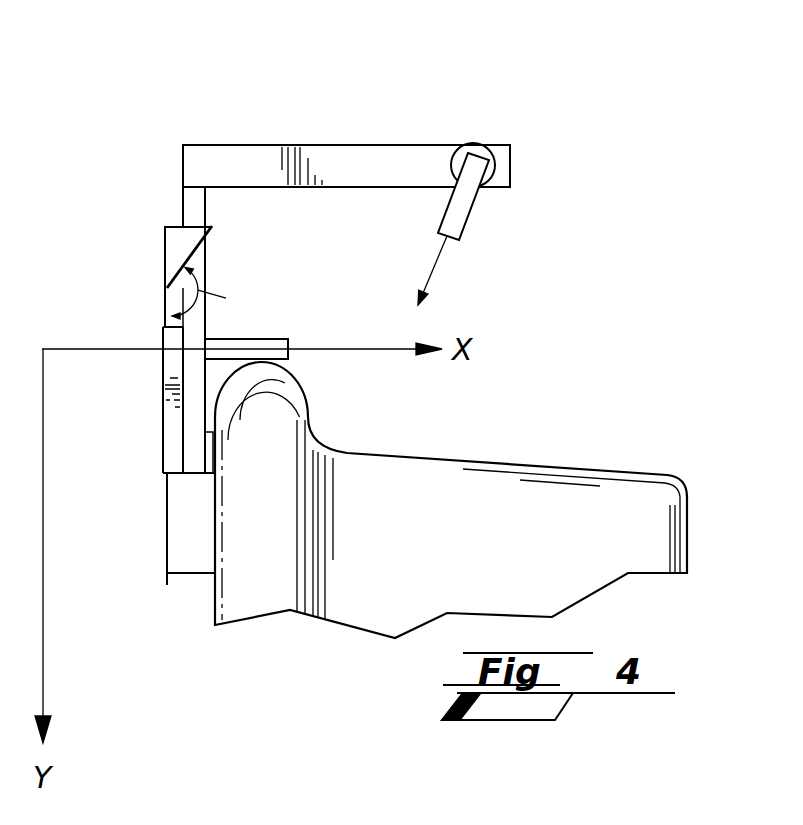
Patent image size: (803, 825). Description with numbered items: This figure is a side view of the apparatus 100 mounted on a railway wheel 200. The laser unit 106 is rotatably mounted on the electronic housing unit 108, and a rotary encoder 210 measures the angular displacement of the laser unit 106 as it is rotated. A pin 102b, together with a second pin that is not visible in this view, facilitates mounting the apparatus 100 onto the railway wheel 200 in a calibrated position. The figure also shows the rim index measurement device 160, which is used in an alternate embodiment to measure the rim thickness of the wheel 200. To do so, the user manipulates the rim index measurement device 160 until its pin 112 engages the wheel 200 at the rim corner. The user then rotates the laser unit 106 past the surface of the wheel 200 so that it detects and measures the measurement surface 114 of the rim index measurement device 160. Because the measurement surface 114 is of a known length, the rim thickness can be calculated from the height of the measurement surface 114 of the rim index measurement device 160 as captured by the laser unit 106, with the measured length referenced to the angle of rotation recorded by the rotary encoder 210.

The apparatus 100 is at (709, 166).
The pin 102b is at (260, 339).
The laser unit 106 is at (486, 210).
The electronic housing unit 108 is at (373, 138).
The pin 112 is at (192, 575).
The measurement surface 114 is at (149, 261).
The rim index measurement device 160 is at (134, 406).
The railway wheel 200 is at (557, 463).
The rotary encoder 210 is at (483, 143).